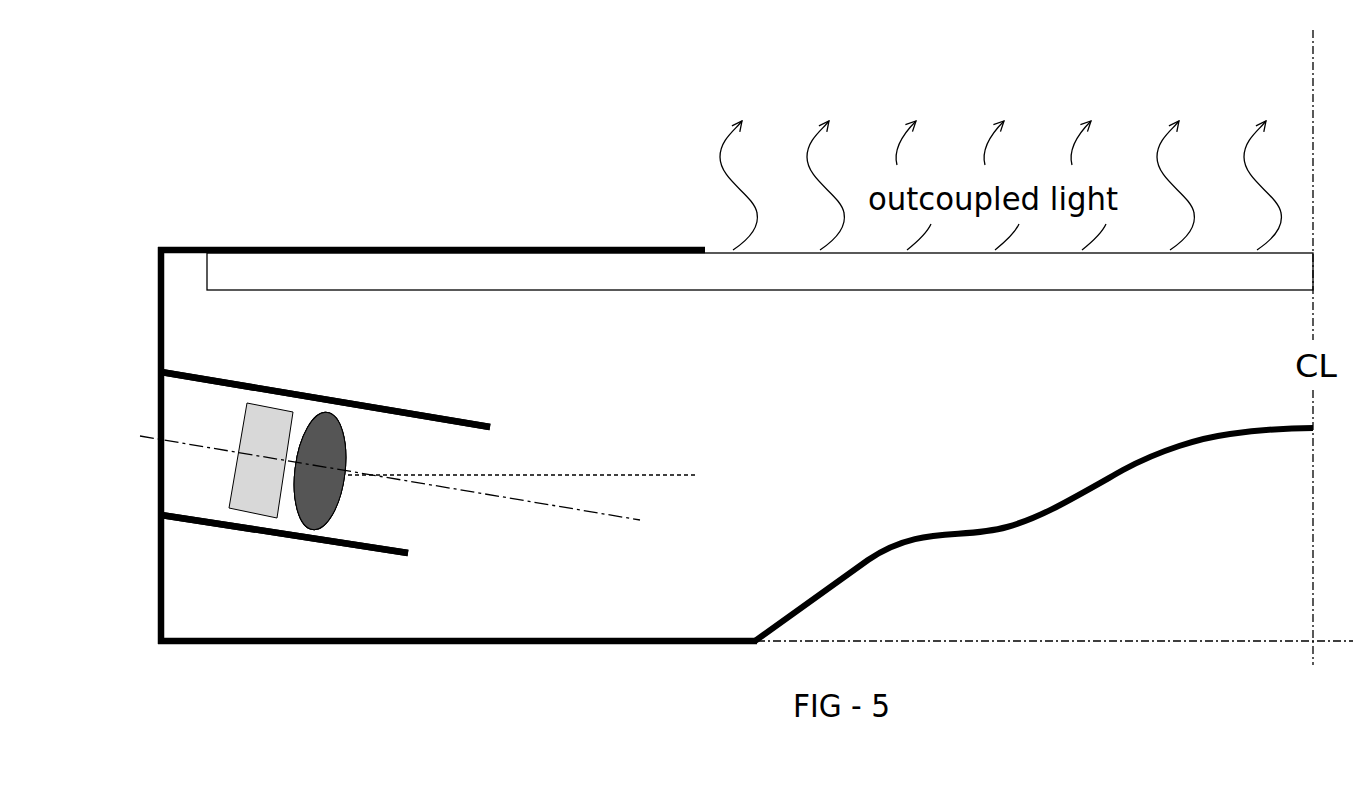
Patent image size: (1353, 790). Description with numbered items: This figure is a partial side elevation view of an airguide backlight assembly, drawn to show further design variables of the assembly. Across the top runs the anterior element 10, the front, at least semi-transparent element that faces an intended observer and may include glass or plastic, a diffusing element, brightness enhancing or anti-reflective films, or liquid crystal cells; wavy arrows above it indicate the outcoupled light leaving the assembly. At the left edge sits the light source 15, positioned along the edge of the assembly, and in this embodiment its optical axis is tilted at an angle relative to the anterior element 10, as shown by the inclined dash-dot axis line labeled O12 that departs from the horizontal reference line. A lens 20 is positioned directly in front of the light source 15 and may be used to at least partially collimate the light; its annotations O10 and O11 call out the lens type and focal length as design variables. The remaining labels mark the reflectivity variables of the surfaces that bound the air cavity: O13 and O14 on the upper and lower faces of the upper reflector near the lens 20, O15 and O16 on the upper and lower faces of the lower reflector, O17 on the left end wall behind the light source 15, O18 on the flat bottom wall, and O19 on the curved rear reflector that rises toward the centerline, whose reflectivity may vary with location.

The anterior element 10 is at (760, 271).
The light source 15 is at (243, 477).
The lens 20 is at (327, 500).
The lens type parameter O10 is at (340, 423).
The lens focal length parameter O11 is at (471, 432).
The optical axis orientation O12 is at (566, 477).
The upper reflector top surface reflectivity O13 is at (341, 396).
The upper reflector underside reflectivity and surface texture O14 is at (435, 422).
The lower reflector top surface reflectivity and surface texture O15 is at (386, 541).
The lower reflector underside reflectivity O16 is at (300, 541).
The left housing wall reflectivity O17 is at (166, 567).
The bottom housing wall reflectivity O18 is at (484, 639).
The curved reflector reflectivity varying with location O19 is at (1077, 493).